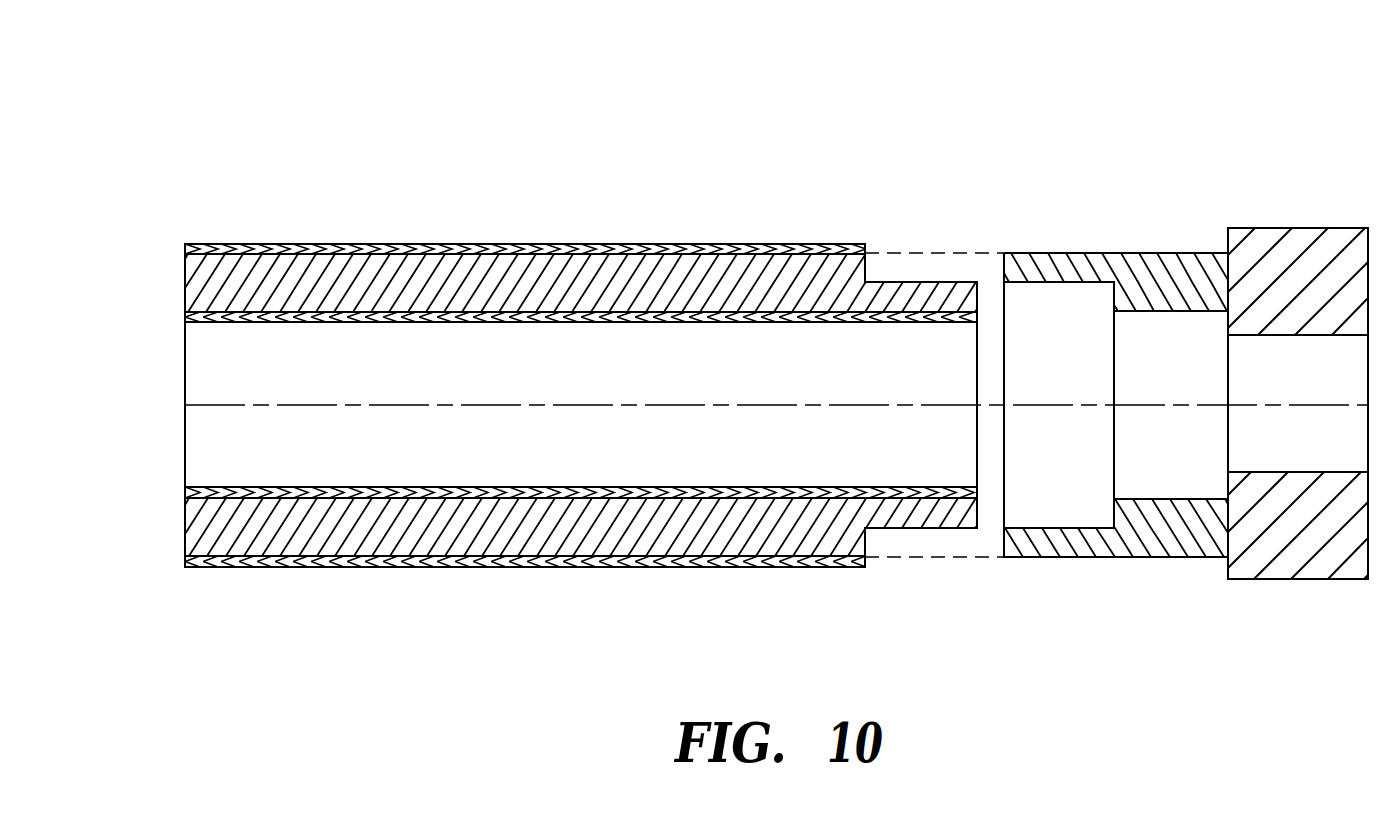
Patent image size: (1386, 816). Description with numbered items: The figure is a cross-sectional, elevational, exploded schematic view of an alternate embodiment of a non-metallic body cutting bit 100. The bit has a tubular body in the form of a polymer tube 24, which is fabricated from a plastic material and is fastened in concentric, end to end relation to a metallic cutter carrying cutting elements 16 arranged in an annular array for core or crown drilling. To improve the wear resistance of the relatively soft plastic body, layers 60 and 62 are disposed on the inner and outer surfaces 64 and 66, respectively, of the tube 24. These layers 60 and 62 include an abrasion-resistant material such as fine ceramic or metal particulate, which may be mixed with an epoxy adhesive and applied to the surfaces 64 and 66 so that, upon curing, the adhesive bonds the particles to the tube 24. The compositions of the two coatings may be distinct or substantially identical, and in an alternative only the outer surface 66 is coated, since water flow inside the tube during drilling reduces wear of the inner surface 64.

The cutting bit 100 is at (190, 95).
The tube 24 is at (360, 543).
The layer 62 is at (260, 250).
The outer surface 66 is at (362, 253).
The layer 60 is at (260, 322).
The inner surface 64 is at (358, 313).
The cutting elements 16 is at (1343, 240).